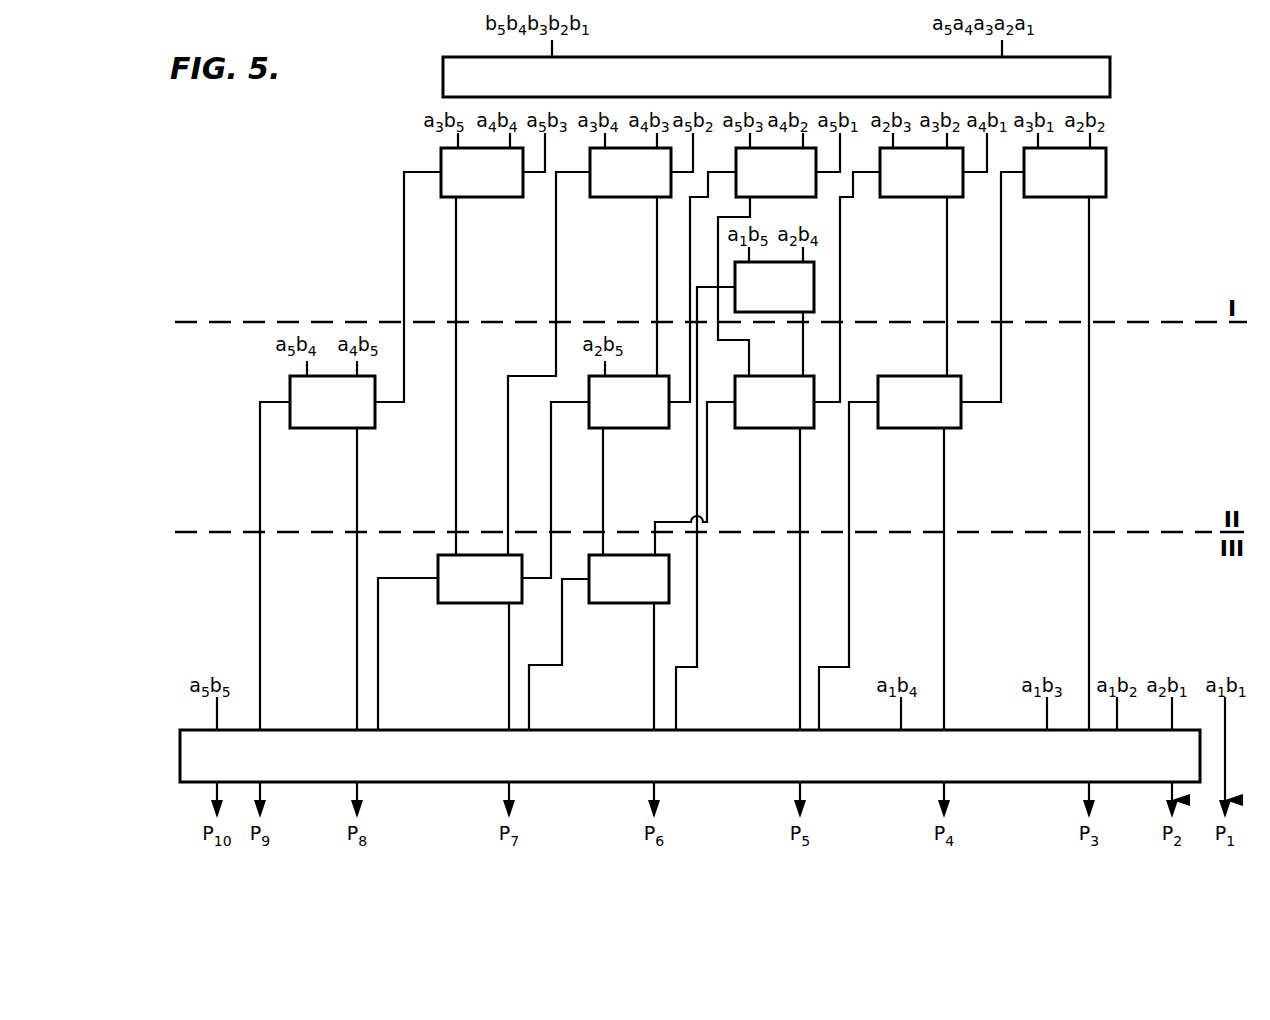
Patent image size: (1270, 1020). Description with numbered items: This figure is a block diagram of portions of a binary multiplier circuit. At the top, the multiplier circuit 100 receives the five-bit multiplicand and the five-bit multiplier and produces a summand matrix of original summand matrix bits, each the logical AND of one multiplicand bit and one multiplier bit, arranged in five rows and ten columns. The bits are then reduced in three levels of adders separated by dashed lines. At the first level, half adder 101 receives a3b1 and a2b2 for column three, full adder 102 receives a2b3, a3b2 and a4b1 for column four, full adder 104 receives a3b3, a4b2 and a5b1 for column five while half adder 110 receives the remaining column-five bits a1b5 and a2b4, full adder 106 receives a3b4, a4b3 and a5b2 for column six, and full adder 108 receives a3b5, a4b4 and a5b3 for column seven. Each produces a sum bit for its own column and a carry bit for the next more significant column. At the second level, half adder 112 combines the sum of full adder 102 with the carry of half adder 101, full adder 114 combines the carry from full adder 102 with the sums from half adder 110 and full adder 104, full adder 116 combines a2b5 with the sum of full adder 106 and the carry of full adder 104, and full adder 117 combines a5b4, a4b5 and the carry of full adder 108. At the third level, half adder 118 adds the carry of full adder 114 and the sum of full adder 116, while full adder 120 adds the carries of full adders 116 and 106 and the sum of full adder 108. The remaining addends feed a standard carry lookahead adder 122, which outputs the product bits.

The multiplier circuit 100 is at (1110, 72).
The half adder circuit 101 is at (1106, 166).
The full adder 102 is at (900, 197).
The full adder 104 is at (816, 187).
The full adder 106 is at (630, 197).
The full adder 108 is at (478, 197).
The half adder 110 is at (814, 275).
The half adder 112 is at (961, 415).
The full adder 114 is at (773, 428).
The full adder 116 is at (618, 428).
The full adder 117 is at (290, 392).
The half adder 118 is at (612, 603).
The full adder 120 is at (438, 565).
The carry lookahead adder 122 is at (180, 746).